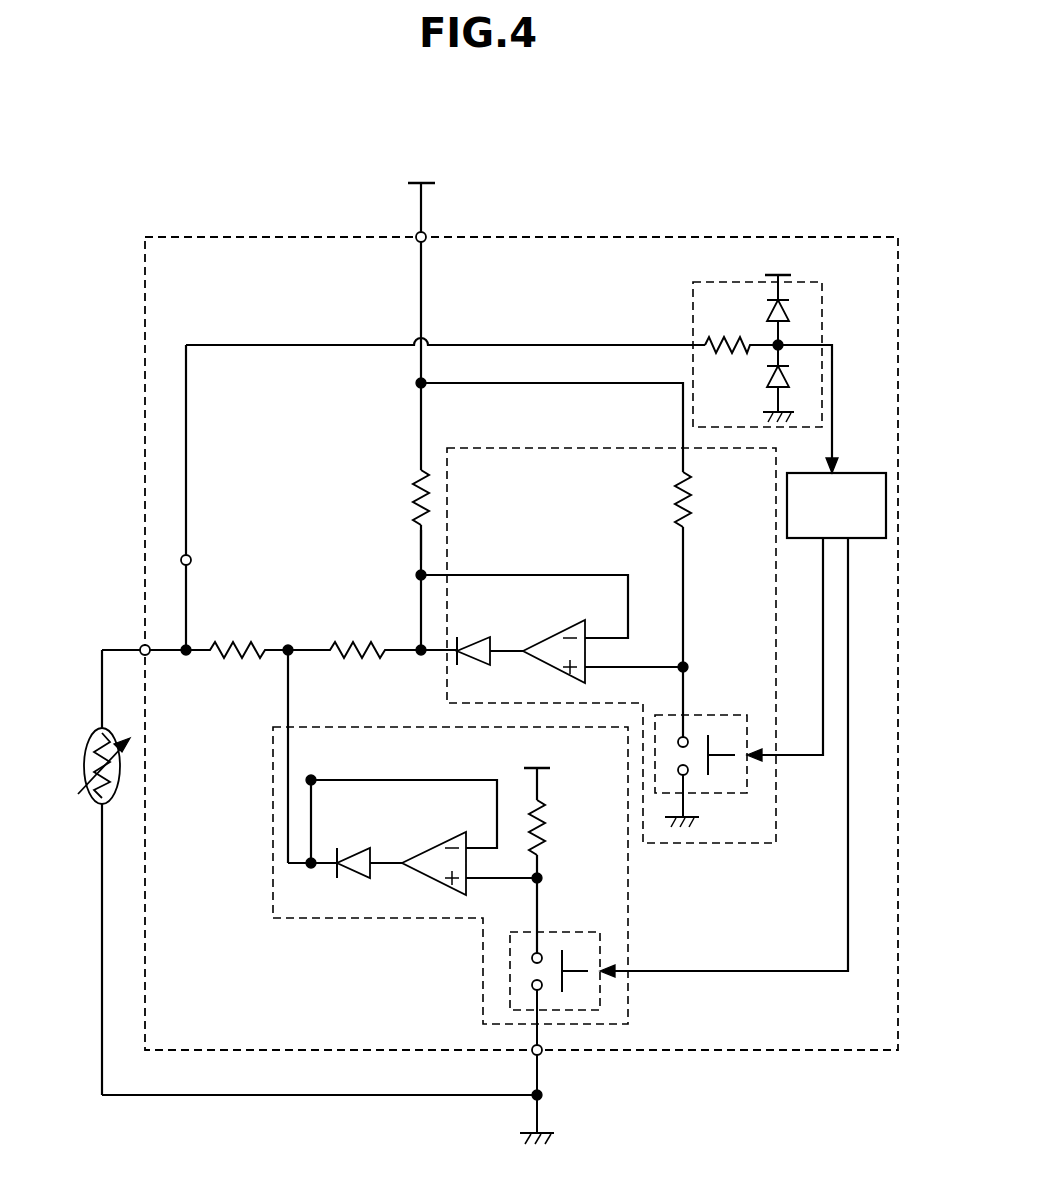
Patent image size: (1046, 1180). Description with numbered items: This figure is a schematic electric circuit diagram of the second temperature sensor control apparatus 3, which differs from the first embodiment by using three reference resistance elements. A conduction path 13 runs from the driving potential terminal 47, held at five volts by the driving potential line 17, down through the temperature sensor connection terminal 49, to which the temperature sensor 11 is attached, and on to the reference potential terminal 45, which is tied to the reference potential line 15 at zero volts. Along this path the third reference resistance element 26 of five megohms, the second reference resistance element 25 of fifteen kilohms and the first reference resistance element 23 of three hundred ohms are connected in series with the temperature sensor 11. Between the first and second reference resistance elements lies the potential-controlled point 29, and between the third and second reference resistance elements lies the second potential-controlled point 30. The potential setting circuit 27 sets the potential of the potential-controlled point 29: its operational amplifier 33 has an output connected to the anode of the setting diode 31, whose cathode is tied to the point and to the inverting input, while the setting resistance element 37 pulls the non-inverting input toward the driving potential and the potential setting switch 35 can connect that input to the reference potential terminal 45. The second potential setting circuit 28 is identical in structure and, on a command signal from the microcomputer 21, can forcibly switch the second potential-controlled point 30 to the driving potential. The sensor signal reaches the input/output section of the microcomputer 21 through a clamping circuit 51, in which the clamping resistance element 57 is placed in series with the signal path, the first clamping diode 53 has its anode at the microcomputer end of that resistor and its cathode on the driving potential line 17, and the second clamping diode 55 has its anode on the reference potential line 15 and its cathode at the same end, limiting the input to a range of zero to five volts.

The second temperature sensor control apparatus 3 is at (798, 208).
The temperature sensor 11 is at (90, 742).
The conduction path 13 is at (418, 545).
The reference potential line 15 is at (546, 1130).
The driving potential line 17 is at (436, 183).
The microcomputer 21 is at (858, 472).
The first reference resistance element 23 is at (246, 643).
The second reference resistance element 25 is at (360, 643).
The third reference resistance element 26 is at (416, 476).
The potential setting circuit 27 is at (272, 780).
The second potential setting circuit 28 is at (555, 448).
The potential-controlled point 29 is at (289, 643).
The second potential-controlled point 30 is at (418, 657).
The setting diode 31 is at (478, 637).
The operational amplifier 33 is at (548, 634).
The potential setting switch 35 is at (716, 714).
The setting resistance element 37 is at (678, 502).
The reference potential terminal 45 is at (542, 1054).
The driving potential terminal 47 is at (426, 233).
The temperature sensor connection terminal 49 is at (142, 645).
The clamping circuit 51 is at (693, 298).
The first clamping diode 53 is at (790, 308).
The second clamping diode 55 is at (768, 388).
The clamping resistance element 57 is at (738, 343).